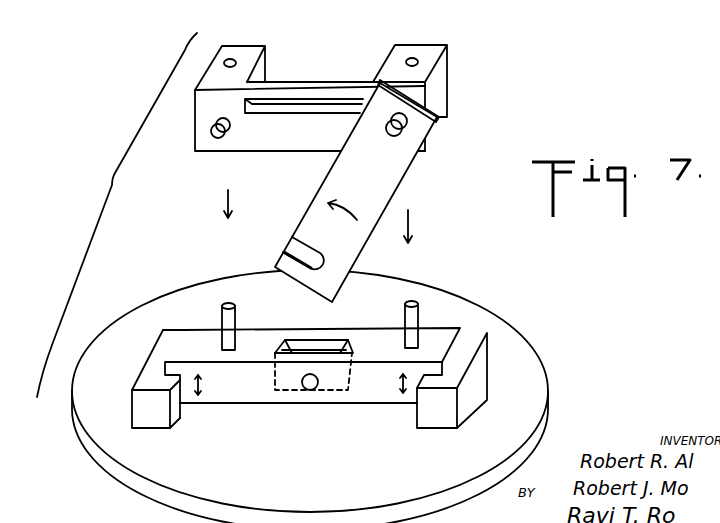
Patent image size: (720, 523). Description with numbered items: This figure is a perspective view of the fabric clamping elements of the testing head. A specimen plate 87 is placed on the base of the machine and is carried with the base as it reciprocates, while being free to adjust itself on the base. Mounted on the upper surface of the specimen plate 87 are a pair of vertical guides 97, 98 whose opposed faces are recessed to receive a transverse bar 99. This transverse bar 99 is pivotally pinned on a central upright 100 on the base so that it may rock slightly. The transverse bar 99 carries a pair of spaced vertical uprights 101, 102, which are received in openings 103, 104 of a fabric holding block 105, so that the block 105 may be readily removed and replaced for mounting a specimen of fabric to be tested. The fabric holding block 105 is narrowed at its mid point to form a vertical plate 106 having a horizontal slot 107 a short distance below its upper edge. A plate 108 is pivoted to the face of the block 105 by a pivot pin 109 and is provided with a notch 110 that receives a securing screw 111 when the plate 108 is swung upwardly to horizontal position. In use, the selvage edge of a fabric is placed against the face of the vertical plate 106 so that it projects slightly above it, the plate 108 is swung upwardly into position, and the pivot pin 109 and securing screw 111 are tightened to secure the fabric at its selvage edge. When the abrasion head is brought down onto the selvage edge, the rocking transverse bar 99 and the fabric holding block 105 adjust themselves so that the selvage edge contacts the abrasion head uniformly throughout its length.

The specimen plate 87 is at (523, 358).
The vertical guide 97 is at (160, 346).
The vertical guide 98 is at (470, 338).
The transverse bar 99 is at (437, 335).
The central upright 100 is at (325, 343).
The vertical upright 101 is at (223, 317).
The vertical upright 102 is at (418, 308).
The opening 103 is at (233, 57).
The opening 104 is at (415, 58).
The fabric holding block 105 is at (440, 94).
The vertical plate 106 is at (300, 88).
The horizontal slot 107 is at (268, 105).
The plate 108 is at (392, 173).
The pivot pin 109 is at (397, 128).
The notch 110 is at (300, 248).
The securing screw 111 is at (212, 135).